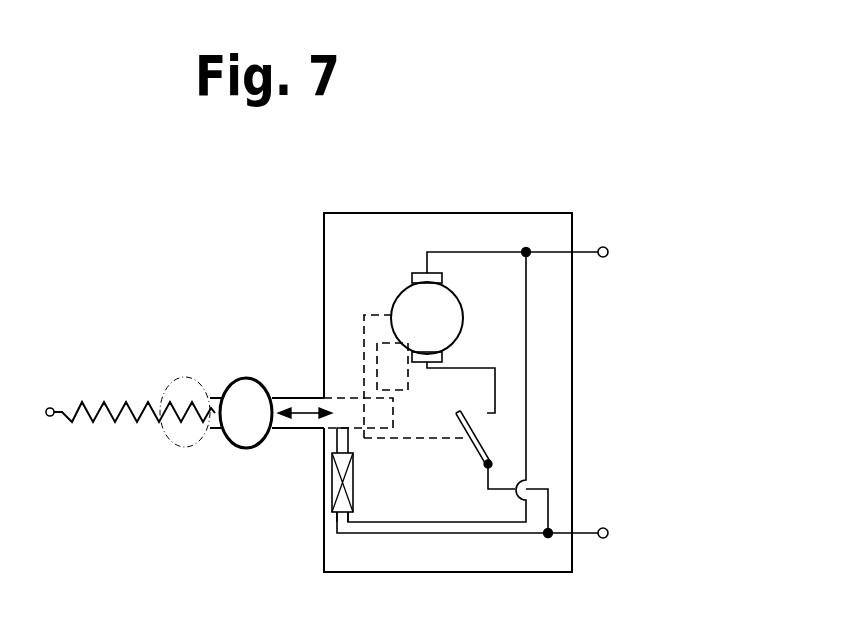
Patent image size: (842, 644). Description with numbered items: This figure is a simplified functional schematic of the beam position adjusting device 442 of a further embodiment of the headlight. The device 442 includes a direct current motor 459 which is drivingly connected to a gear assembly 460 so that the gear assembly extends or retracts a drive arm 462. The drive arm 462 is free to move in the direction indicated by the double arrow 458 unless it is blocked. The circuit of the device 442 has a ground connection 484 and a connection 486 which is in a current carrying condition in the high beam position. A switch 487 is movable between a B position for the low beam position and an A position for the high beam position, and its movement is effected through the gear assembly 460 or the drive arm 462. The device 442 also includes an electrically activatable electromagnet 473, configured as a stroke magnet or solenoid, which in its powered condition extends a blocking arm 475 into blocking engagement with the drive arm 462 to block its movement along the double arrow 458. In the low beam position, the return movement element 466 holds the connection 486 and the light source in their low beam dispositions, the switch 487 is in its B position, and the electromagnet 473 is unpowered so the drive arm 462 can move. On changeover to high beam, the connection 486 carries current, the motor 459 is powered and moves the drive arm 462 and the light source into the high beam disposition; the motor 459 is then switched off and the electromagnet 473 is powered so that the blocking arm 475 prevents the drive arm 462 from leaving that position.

The beam position adjusting device 442 is at (652, 342).
The double arrow 458 is at (304, 416).
The direct current motor 459 is at (402, 300).
The gear assembly 460 is at (390, 375).
The drive arm 462 is at (252, 387).
The return movement element 466 is at (140, 408).
The electromagnet 473 is at (345, 503).
The blocking arm 475 is at (337, 445).
The ground connection 484 is at (610, 250).
The connection 486 is at (610, 535).
The switch 487 is at (483, 432).